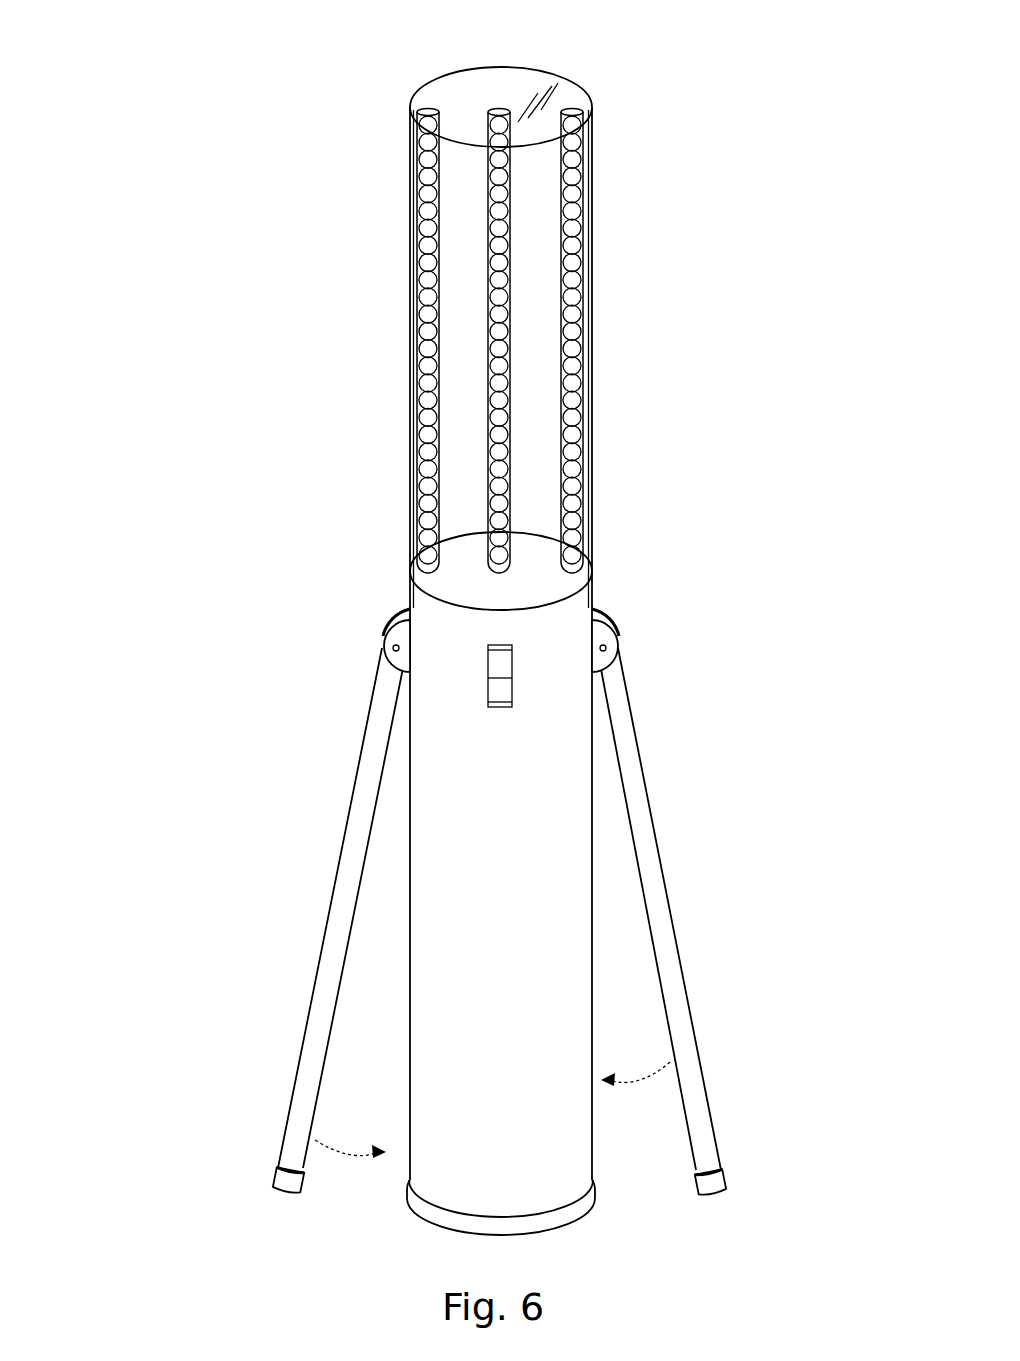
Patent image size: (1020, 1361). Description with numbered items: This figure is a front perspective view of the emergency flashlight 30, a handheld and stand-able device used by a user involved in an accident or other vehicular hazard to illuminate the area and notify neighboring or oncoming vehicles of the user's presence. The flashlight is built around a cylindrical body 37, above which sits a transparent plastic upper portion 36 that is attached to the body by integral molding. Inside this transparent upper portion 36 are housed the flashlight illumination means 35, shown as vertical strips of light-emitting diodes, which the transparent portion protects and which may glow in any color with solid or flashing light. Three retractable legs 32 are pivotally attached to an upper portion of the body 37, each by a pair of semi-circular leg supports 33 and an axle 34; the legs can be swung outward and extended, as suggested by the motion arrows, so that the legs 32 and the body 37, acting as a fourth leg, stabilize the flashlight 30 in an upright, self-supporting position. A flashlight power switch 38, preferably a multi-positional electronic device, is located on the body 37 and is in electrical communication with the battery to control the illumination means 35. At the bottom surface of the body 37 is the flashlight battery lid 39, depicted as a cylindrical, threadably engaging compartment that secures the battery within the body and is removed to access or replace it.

The emergency flashlight 30 is at (127, 135).
The retractable legs 32 is at (322, 998).
The semi-circular leg supports 33 is at (399, 628).
The axle 34 is at (394, 649).
The flashlight illumination means 35 is at (435, 222).
The transparent plastic upper portion 36 is at (452, 87).
The cylindrical body 37 is at (577, 1095).
The flashlight power switch 38 is at (507, 667).
The flashlight battery lid 39 is at (422, 1207).